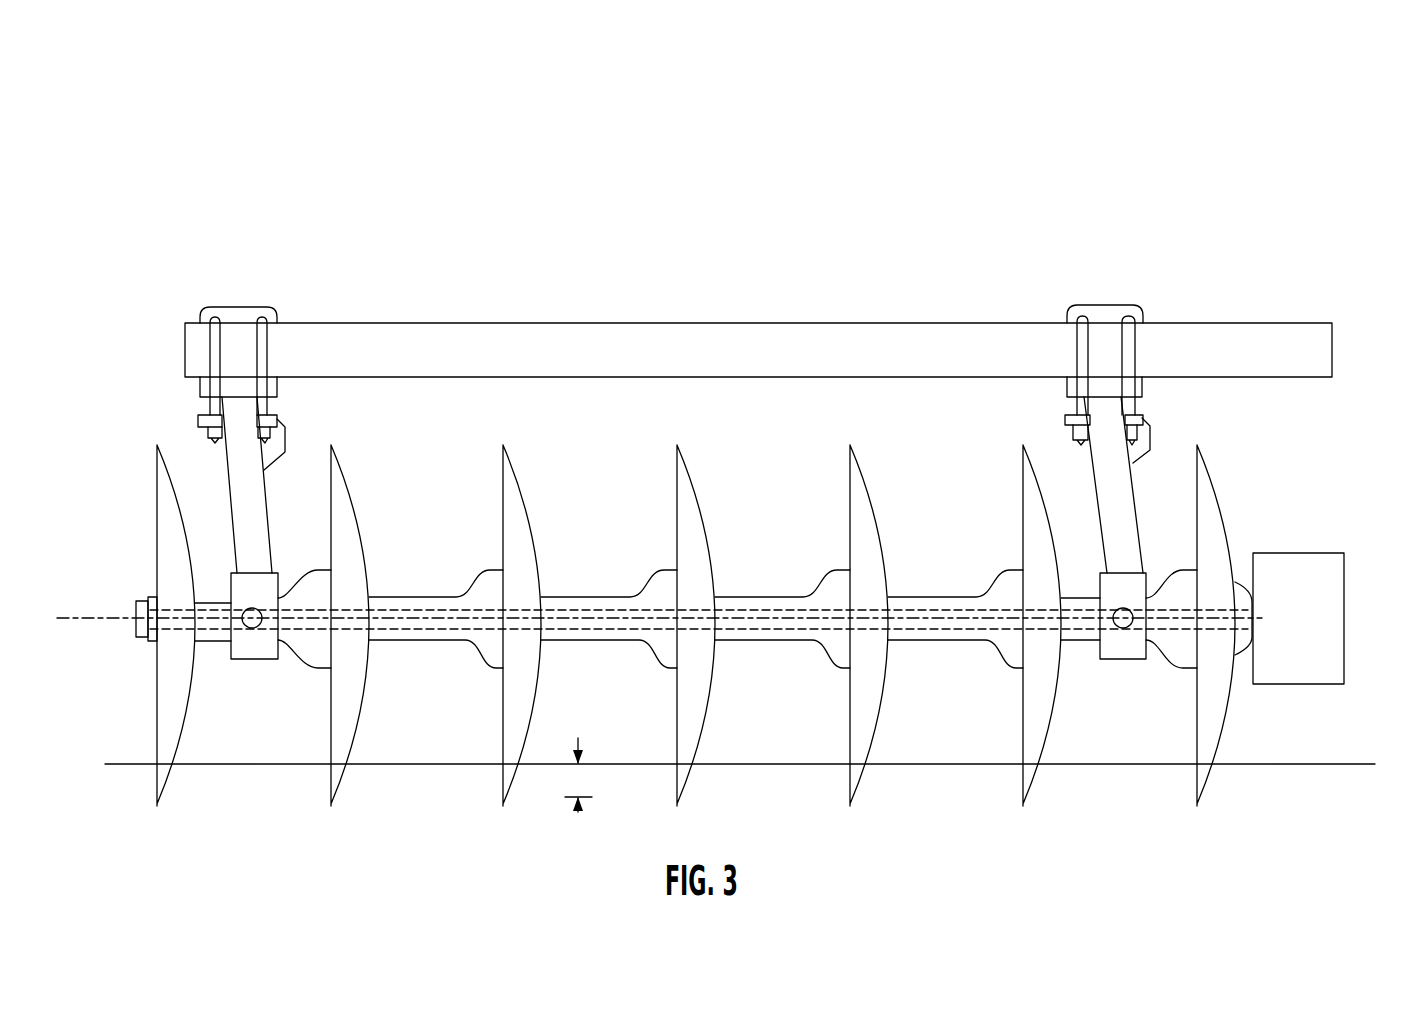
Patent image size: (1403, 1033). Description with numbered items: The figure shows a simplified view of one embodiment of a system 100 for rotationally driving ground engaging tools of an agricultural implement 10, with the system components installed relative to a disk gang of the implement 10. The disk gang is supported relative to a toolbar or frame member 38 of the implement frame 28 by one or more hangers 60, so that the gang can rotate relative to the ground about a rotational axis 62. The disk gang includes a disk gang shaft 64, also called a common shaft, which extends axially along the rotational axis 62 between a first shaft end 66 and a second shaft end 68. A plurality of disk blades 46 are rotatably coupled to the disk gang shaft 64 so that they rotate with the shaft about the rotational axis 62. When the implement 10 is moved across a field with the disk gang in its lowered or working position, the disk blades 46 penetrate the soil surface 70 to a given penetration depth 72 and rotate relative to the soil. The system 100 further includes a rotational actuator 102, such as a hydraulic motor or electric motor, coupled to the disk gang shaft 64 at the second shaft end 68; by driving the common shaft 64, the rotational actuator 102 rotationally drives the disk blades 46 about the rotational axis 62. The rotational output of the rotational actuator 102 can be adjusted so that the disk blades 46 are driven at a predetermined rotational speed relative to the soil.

The implement 10 is at (1266, 132).
The implement frame 28 is at (1235, 321).
The toolbar or frame member 38 is at (1302, 340).
The disk blades 46 is at (157, 804).
The hangers 60 is at (228, 482).
The rotational axis 62 is at (80, 613).
The disk gang shaft 64 is at (216, 629).
The first shaft end 66 is at (116, 568).
The second shaft end 68 is at (1244, 539).
The soil surface 70 is at (1330, 764).
The penetration depth 72 is at (578, 740).
The system 100 is at (159, 171).
The rotational actuator 102 is at (1345, 618).